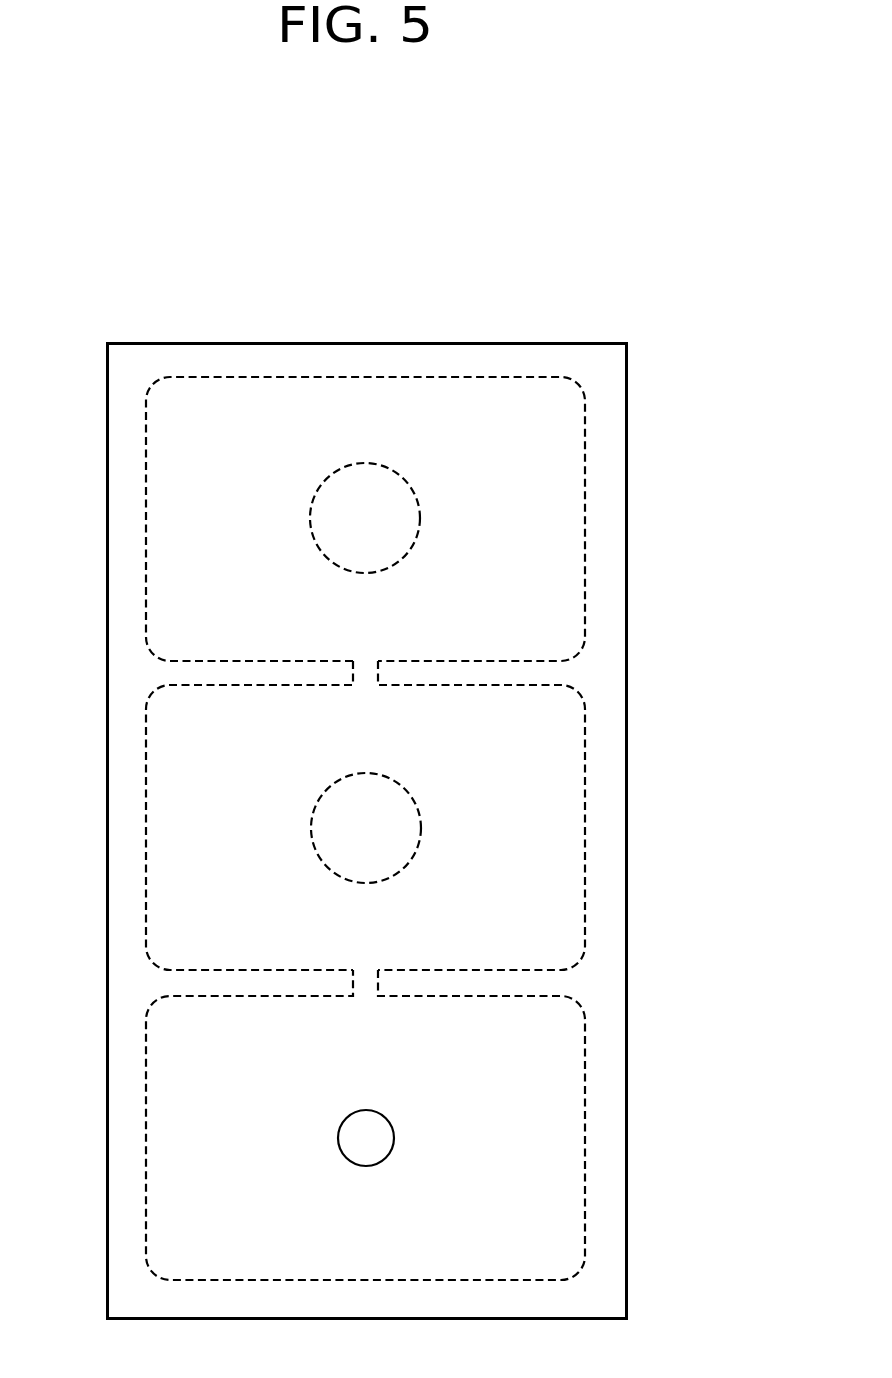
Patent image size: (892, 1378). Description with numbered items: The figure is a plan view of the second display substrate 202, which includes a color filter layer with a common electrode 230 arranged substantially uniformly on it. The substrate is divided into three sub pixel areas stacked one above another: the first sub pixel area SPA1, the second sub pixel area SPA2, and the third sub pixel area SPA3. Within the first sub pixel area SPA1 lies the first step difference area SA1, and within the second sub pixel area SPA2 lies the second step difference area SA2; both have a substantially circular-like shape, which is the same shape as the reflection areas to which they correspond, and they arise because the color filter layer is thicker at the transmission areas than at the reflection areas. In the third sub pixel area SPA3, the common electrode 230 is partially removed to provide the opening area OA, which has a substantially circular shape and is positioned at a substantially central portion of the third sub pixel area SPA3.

The second display substrate 202 is at (392, 274).
The common electrode 230 is at (626, 958).
The first sub pixel area SPA1 is at (556, 445).
The first step difference area SA1 is at (400, 511).
The second sub pixel area SPA2 is at (557, 776).
The second step difference area SA2 is at (402, 830).
The third sub pixel area SPA3 is at (557, 1106).
The opening area OA is at (378, 1141).